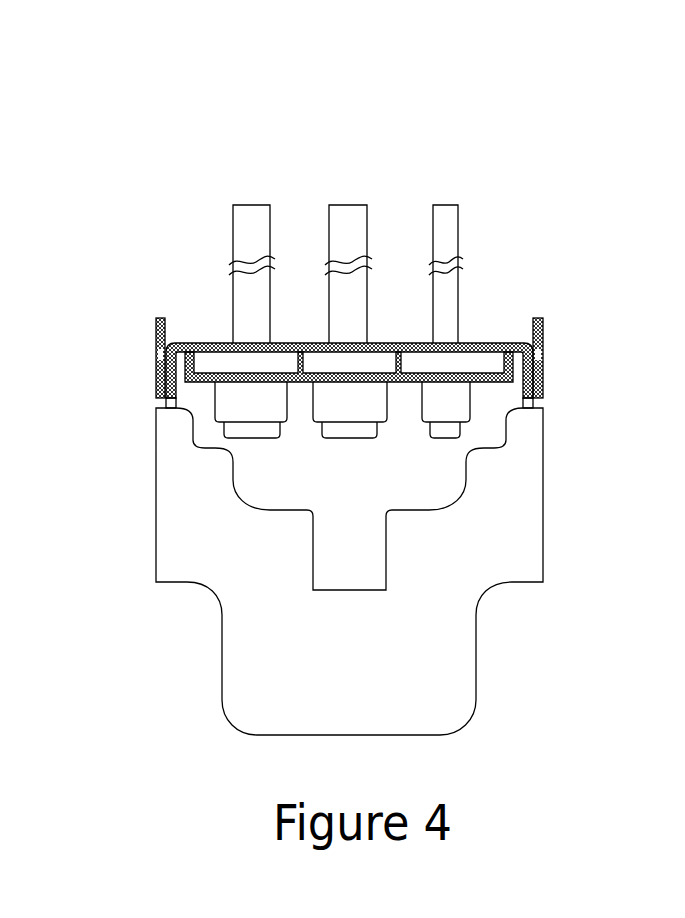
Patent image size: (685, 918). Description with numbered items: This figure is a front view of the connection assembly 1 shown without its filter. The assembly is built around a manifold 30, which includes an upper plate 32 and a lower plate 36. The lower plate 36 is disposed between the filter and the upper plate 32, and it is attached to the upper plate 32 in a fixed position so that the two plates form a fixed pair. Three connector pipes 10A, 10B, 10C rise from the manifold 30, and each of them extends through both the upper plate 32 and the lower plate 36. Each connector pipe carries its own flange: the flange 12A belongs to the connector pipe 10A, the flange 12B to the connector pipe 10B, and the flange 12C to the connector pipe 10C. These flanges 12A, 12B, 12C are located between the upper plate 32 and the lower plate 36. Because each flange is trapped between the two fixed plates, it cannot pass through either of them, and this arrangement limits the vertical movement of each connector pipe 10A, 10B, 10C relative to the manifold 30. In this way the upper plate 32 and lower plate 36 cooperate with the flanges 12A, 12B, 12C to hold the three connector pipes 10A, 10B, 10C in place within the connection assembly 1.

The connection assembly 1 is at (148, 160).
The connector pipe 10A is at (460, 222).
The connector pipe 10B is at (271, 218).
The connector pipe 10C is at (367, 218).
The flange 12A is at (474, 342).
The flange 12B is at (215, 370).
The flange 12C is at (367, 361).
The manifold 30 is at (552, 340).
The upper plate 32 is at (204, 343).
The lower plate 36 is at (400, 383).